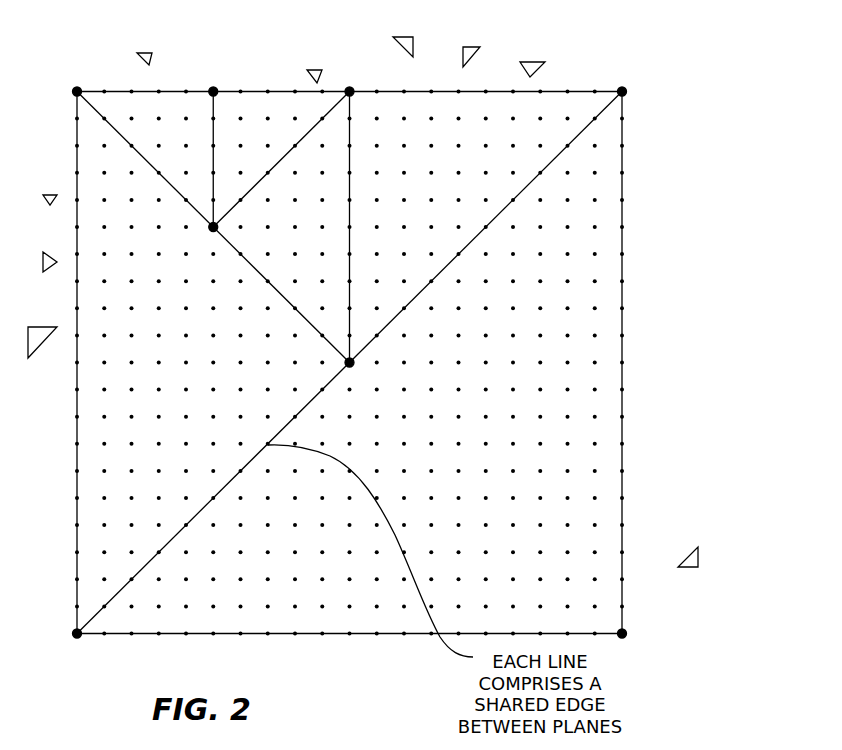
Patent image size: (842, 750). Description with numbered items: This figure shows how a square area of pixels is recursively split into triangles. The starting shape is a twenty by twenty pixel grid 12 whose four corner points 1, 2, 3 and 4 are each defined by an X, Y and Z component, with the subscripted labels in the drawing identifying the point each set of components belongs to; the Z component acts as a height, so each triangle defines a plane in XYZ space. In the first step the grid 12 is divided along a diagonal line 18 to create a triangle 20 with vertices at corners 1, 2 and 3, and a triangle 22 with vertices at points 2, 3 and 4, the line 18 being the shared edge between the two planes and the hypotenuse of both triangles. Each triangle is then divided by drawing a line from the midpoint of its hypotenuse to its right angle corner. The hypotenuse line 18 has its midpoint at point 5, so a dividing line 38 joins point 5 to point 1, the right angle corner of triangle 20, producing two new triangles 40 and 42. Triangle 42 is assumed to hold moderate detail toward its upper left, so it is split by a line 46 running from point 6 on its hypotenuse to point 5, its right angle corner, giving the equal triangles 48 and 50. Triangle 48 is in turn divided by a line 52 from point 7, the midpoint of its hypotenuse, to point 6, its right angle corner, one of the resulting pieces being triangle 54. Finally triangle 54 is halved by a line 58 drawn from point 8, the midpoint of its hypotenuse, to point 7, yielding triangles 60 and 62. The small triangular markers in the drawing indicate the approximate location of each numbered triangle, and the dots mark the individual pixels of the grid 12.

The corner point 1 is at (77, 92).
The corner point 2 is at (624, 91).
The corner point 3 is at (78, 633).
The corner point 4 is at (624, 632).
The point 5 is at (352, 362).
The point 6 is at (352, 94).
The point 7 is at (216, 227).
The point 8 is at (212, 94).
The pixel grid 12 is at (341, 644).
The line 18 is at (472, 240).
The triangle 20 is at (120, 365).
The triangle 22 is at (580, 487).
The dividing line 38 is at (225, 236).
The triangle 40 is at (123, 290).
The triangle 42 is at (488, 133).
The line 46 is at (350, 187).
The triangle 48 is at (315, 157).
The triangle 50 is at (410, 153).
The line 52 is at (280, 163).
The triangle 54 is at (145, 126).
The line 58 is at (214, 155).
The triangle 60 is at (173, 140).
The triangle 62 is at (247, 132).